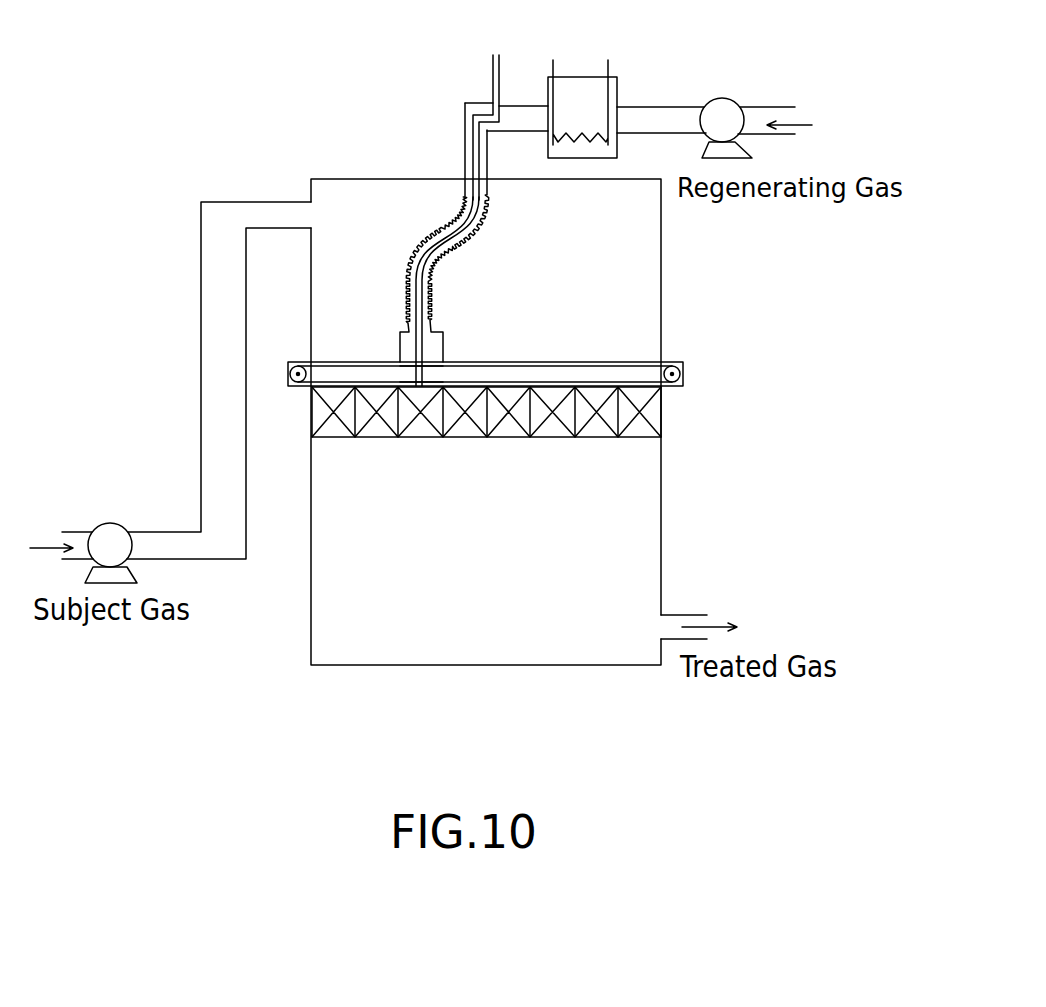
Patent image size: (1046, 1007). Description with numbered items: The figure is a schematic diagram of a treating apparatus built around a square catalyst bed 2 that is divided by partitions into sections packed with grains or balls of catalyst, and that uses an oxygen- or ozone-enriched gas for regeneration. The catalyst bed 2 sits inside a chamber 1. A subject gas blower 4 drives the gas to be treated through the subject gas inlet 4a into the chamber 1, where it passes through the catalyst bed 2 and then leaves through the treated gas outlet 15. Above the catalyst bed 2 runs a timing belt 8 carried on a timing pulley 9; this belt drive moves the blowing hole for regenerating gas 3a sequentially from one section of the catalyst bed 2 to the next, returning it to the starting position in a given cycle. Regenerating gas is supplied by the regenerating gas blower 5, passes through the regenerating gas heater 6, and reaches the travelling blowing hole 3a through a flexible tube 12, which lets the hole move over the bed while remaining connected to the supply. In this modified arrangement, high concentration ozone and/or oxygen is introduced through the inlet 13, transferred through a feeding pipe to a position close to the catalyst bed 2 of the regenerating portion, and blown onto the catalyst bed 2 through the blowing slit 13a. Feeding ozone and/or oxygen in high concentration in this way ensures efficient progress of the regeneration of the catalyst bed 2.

The chamber 1 is at (657, 292).
The catalyst bed 2 is at (643, 410).
The blowing hole for regenerating gas 3a is at (410, 370).
The subject gas blower 4 is at (123, 520).
The subject gas inlet 4a is at (307, 202).
The regenerating gas blower 5 is at (723, 97).
The regenerating gas heater 6 is at (617, 92).
The timing belt 8 is at (627, 363).
The timing pulley 9 is at (293, 358).
The flexible tube 12 is at (410, 280).
The inlet of high concentration ozone and/or oxygen 13 is at (490, 86).
The blowing slit for high concentration ozone and/or oxygen 13a is at (418, 388).
The treated gas outlet 15 is at (665, 612).